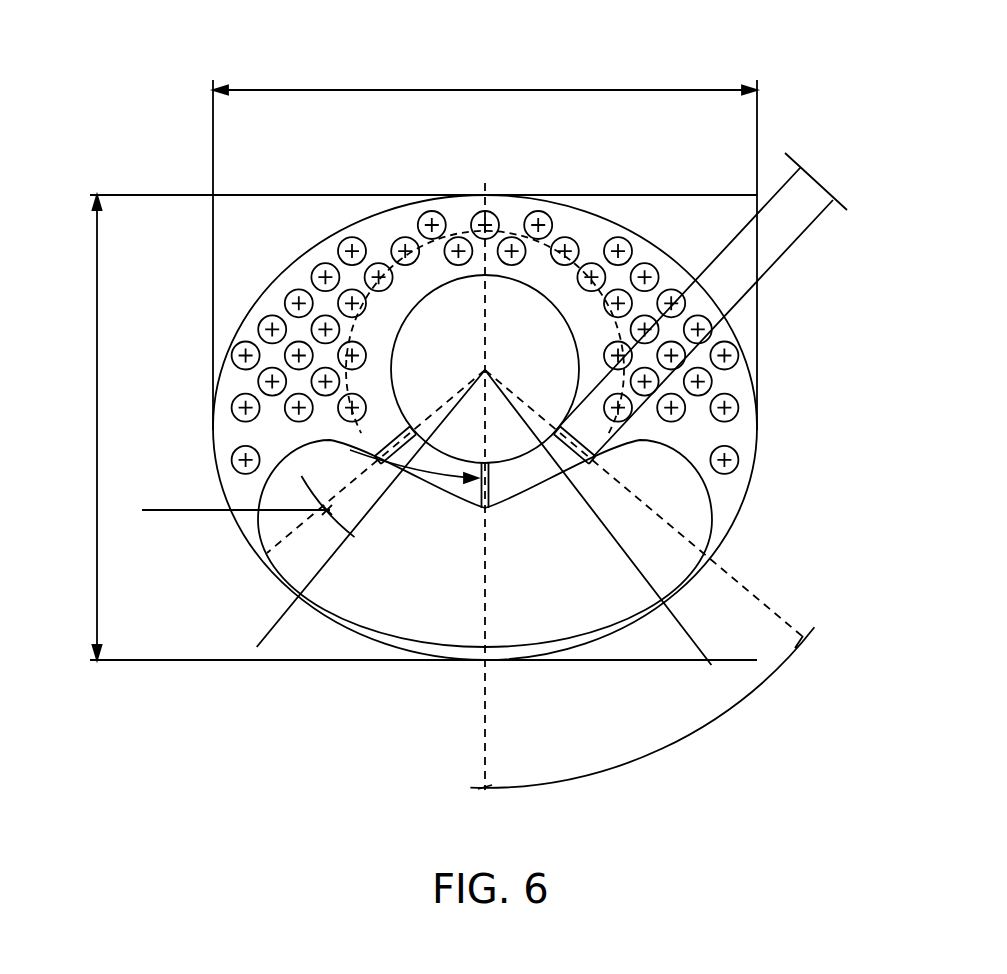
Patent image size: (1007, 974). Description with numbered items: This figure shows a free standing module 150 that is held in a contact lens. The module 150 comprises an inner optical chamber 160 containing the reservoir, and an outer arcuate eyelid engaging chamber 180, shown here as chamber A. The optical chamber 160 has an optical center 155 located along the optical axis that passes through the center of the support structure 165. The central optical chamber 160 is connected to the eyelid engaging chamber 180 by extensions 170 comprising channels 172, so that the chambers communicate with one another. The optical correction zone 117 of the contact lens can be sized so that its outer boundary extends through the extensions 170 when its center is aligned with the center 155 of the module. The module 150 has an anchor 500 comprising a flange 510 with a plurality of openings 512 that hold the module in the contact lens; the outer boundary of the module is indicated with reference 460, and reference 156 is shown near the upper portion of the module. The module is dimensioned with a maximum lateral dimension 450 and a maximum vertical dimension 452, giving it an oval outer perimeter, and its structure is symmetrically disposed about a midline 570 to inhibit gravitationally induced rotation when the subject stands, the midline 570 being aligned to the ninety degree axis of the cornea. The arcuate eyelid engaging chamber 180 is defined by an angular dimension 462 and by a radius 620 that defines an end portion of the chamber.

The module 150 is at (723, 55).
The face 156 is at (597, 160).
The optical chamber 160 is at (470, 341).
The support structure 165 is at (578, 300).
The extension 170 is at (380, 458).
The channel 172 is at (489, 510).
The eyelid engaging chamber 180 is at (438, 550).
The optical correction zone 117 is at (353, 337).
The optical center 155 is at (488, 369).
The maximum lateral dimension 450 is at (522, 88).
The maximum vertical dimension 452 is at (97, 433).
The outer edge 460 is at (588, 212).
The angular dimension 462 is at (683, 742).
The anchor 500 is at (430, 182).
The flange 510 is at (506, 212).
The openings 512 is at (342, 242).
The midline 570 is at (483, 706).
The radius 620 is at (152, 510).
The chamber A is at (450, 632).